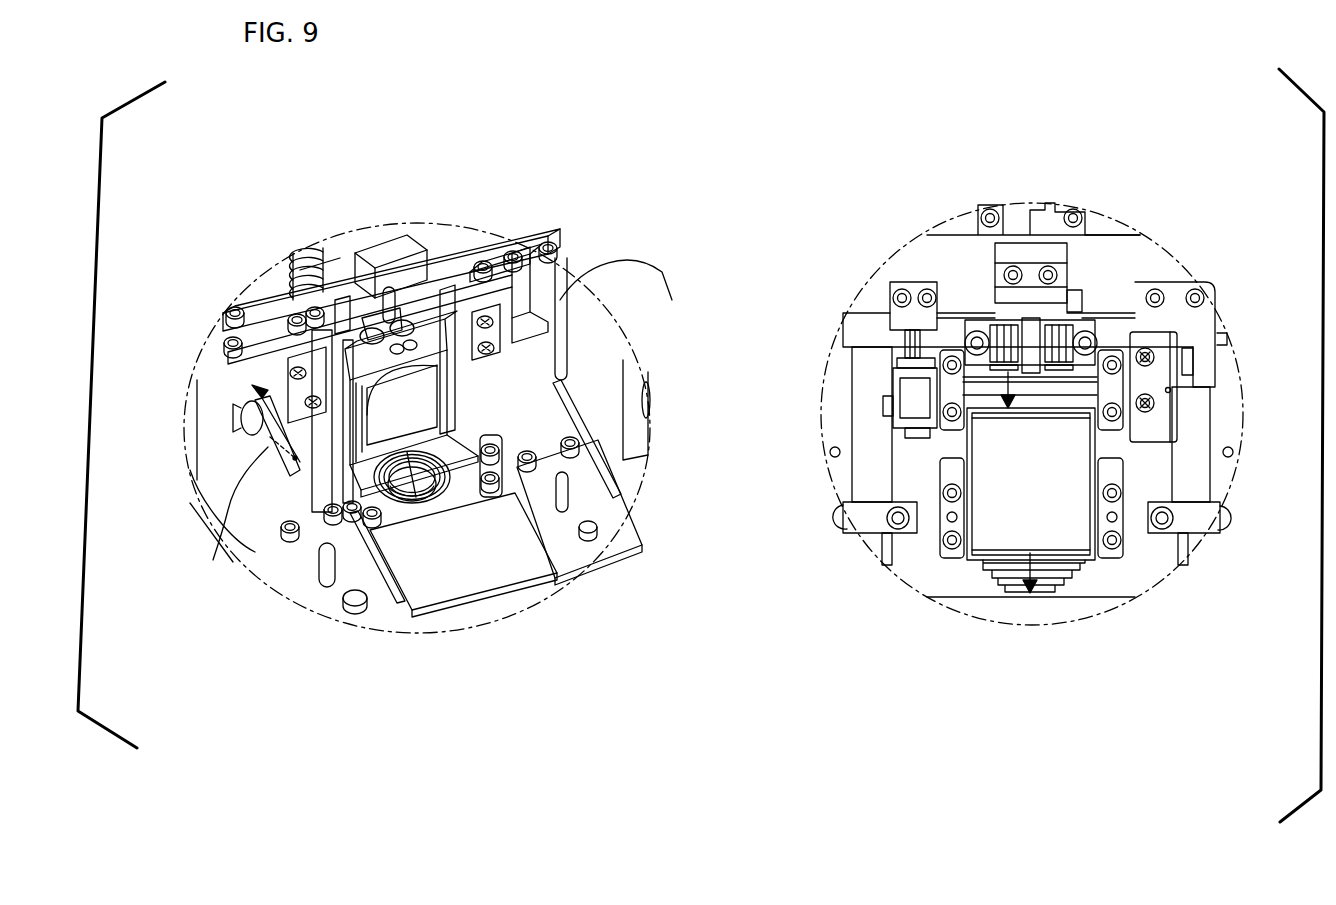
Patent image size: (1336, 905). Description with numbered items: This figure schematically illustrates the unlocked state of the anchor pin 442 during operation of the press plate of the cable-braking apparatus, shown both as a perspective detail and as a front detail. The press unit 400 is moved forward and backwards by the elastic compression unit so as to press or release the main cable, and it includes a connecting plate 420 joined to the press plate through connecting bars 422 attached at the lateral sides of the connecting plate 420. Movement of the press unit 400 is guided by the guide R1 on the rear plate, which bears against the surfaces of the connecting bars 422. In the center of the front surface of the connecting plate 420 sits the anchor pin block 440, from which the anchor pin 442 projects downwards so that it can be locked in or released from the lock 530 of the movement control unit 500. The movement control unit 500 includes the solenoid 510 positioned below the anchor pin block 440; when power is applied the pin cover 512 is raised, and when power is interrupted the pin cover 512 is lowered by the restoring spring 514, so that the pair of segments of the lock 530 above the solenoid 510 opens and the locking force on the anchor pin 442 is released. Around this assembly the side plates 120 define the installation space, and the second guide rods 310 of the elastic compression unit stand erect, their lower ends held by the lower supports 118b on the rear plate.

The side plate 120 is at (585, 297).
The second guide rod 310 is at (556, 413).
The press unit 400 is at (430, 232).
The connecting plate 420 is at (463, 263).
The connecting bar 422 is at (268, 447).
The anchor pin block 440 is at (363, 313).
The anchor pin 442 is at (300, 268).
The movement control unit 500 is at (947, 563).
The solenoid 510 is at (412, 418).
The pin cover 512 is at (1040, 383).
The restoring spring 514 is at (1070, 577).
The lock 530 is at (368, 282).
The guide R1 is at (240, 412).
The lower support 118b is at (597, 492).